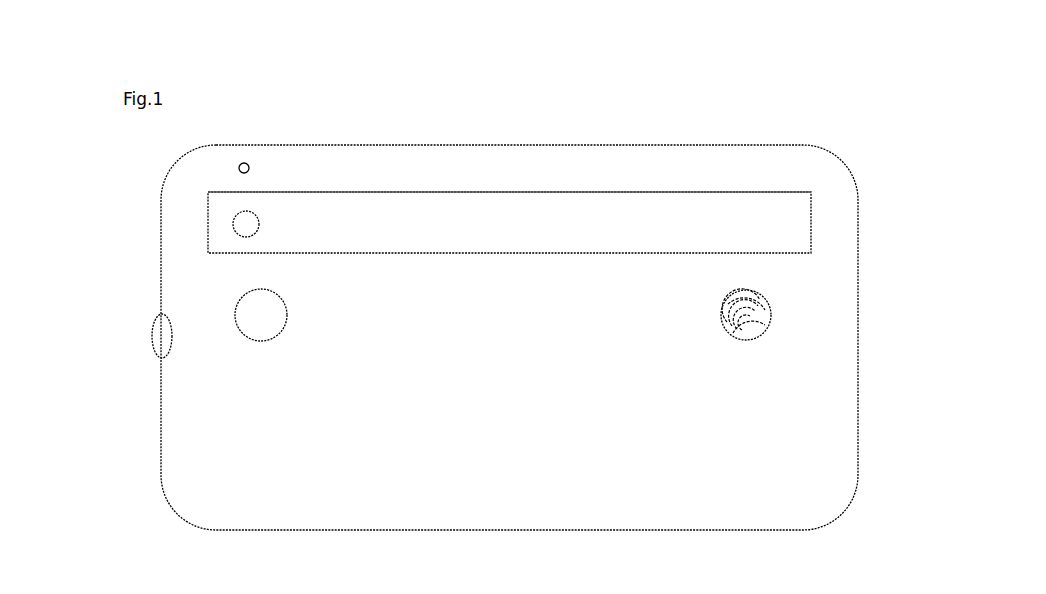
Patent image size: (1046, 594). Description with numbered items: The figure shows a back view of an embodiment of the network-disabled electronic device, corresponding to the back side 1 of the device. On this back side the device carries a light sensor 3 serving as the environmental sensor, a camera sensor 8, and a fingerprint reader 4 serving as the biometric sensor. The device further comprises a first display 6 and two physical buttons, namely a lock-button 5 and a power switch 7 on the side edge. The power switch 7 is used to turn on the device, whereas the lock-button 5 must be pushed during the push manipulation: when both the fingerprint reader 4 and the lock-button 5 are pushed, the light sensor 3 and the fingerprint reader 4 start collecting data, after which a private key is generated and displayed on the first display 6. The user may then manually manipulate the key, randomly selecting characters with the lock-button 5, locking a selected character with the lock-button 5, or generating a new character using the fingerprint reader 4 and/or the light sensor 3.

The back side 1 is at (758, 68).
The light sensor 3 is at (239, 167).
The fingerprint reader 4 is at (762, 325).
The lock-button 5 is at (250, 312).
The first display 6 is at (208, 251).
The power switch 7 is at (165, 338).
The camera sensor 8 is at (233, 223).